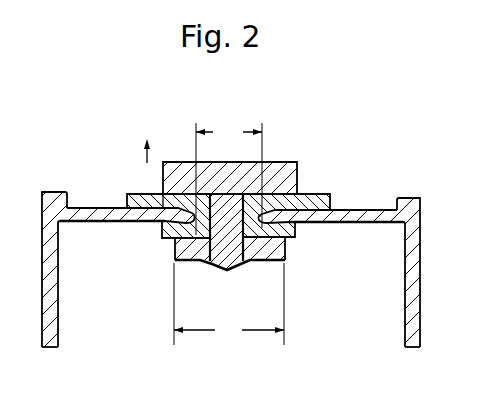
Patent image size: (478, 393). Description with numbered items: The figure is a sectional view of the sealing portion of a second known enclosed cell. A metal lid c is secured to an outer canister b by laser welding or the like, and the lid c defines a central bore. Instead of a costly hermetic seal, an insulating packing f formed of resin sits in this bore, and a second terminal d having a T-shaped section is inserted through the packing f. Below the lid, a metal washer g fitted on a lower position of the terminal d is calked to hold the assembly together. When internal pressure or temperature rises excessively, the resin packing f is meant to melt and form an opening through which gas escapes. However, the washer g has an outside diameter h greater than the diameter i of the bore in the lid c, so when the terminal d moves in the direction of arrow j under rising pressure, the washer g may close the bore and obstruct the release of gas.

The outer canister b is at (422, 240).
The metal lid c is at (370, 209).
The second terminal d is at (284, 162).
The insulating packing f is at (320, 194).
The metal washer g is at (266, 262).
The outside diameter of washer h is at (229, 304).
The bore diameter i is at (229, 176).
The direction of terminal movement j is at (139, 152).